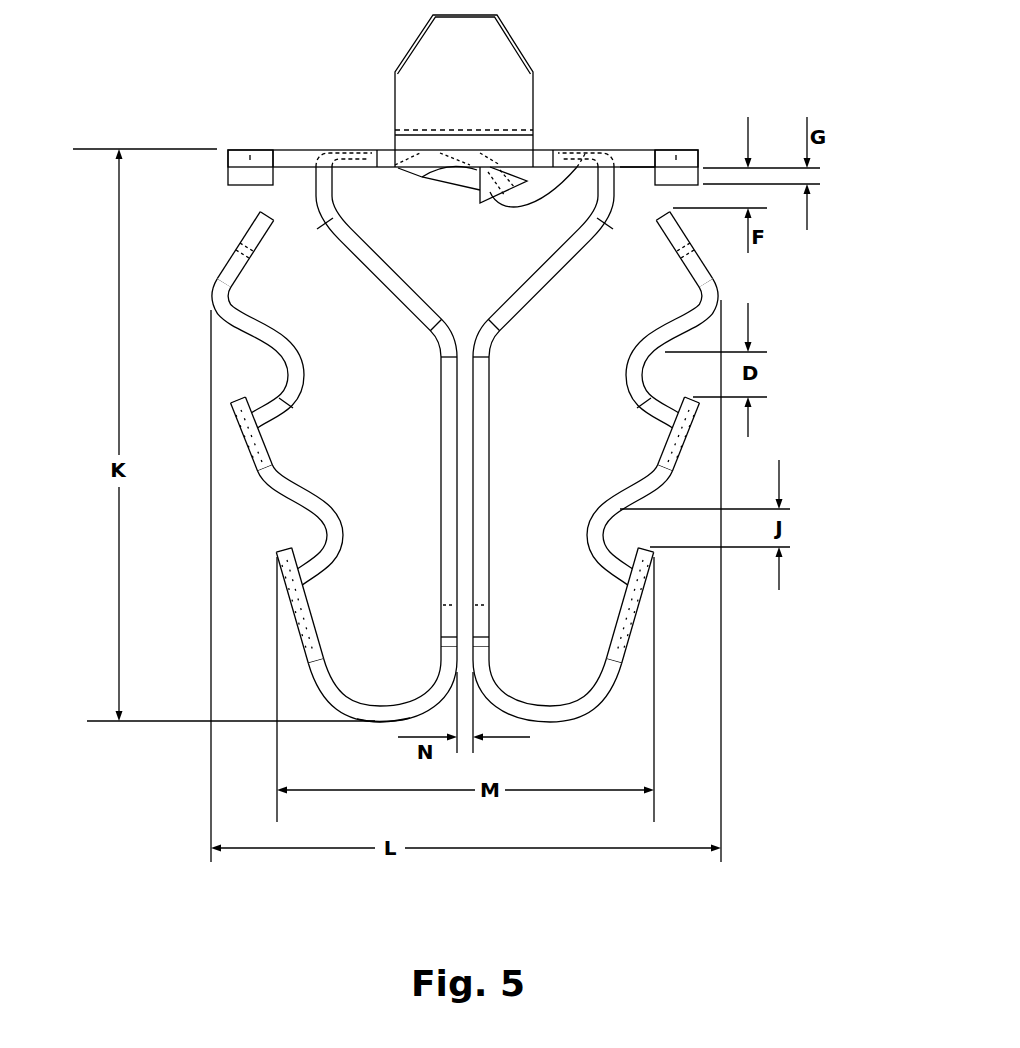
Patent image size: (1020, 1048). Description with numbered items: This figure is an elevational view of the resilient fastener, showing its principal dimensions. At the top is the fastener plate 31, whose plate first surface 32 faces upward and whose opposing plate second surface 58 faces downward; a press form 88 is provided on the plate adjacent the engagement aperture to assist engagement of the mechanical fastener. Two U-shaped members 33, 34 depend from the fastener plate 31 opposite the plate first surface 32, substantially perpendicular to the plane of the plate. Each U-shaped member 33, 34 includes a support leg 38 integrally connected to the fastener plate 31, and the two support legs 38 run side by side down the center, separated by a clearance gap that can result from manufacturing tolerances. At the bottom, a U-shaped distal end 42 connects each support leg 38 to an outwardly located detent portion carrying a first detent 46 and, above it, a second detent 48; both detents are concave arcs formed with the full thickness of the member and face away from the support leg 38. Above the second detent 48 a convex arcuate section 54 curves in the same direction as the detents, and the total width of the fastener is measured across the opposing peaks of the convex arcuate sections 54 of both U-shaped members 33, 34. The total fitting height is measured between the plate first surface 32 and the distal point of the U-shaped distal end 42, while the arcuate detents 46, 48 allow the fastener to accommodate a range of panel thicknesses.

The fastener plate 31 is at (300, 152).
The plate first surface 32 is at (277, 148).
The U-shaped member 33 is at (412, 703).
The U-shaped member 34 is at (537, 707).
The support leg 38 is at (487, 497).
The U-shaped distal end 42 is at (371, 725).
The first detent 46 is at (332, 542).
The second detent 48 is at (297, 382).
The convex arcuate section 54 is at (215, 292).
The plate second surface 58 is at (636, 170).
The press form 88 is at (560, 175).